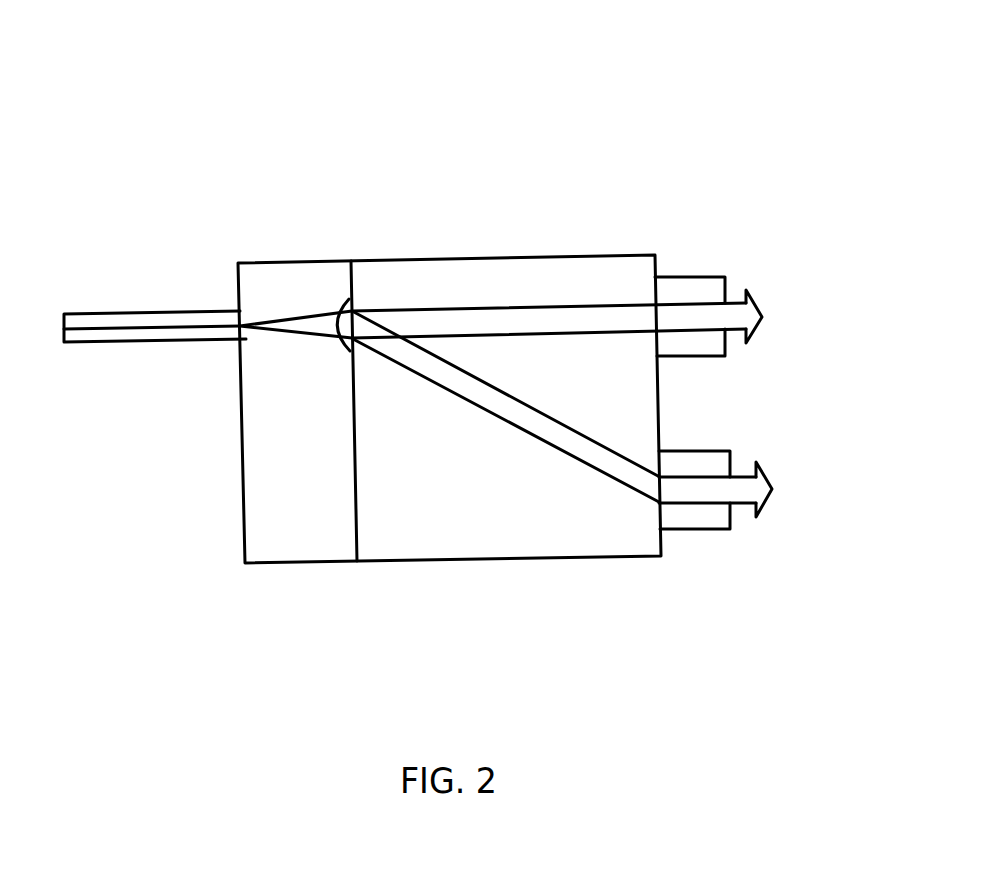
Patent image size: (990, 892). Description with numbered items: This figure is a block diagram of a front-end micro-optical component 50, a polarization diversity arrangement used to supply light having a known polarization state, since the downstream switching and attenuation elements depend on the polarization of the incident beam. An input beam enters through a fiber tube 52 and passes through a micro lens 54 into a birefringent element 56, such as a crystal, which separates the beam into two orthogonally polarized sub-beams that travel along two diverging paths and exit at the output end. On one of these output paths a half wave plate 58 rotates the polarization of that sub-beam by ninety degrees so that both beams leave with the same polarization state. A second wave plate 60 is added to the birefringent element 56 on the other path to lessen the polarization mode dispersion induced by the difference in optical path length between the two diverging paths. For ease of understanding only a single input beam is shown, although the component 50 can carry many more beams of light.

The front-end micro-optical component 50 is at (798, 159).
The fiber tube 52 is at (85, 330).
The micro lens 54 is at (243, 472).
The birefringent element 56 is at (419, 259).
The half wave plate 58 is at (697, 532).
The second wave plate 60 is at (694, 277).